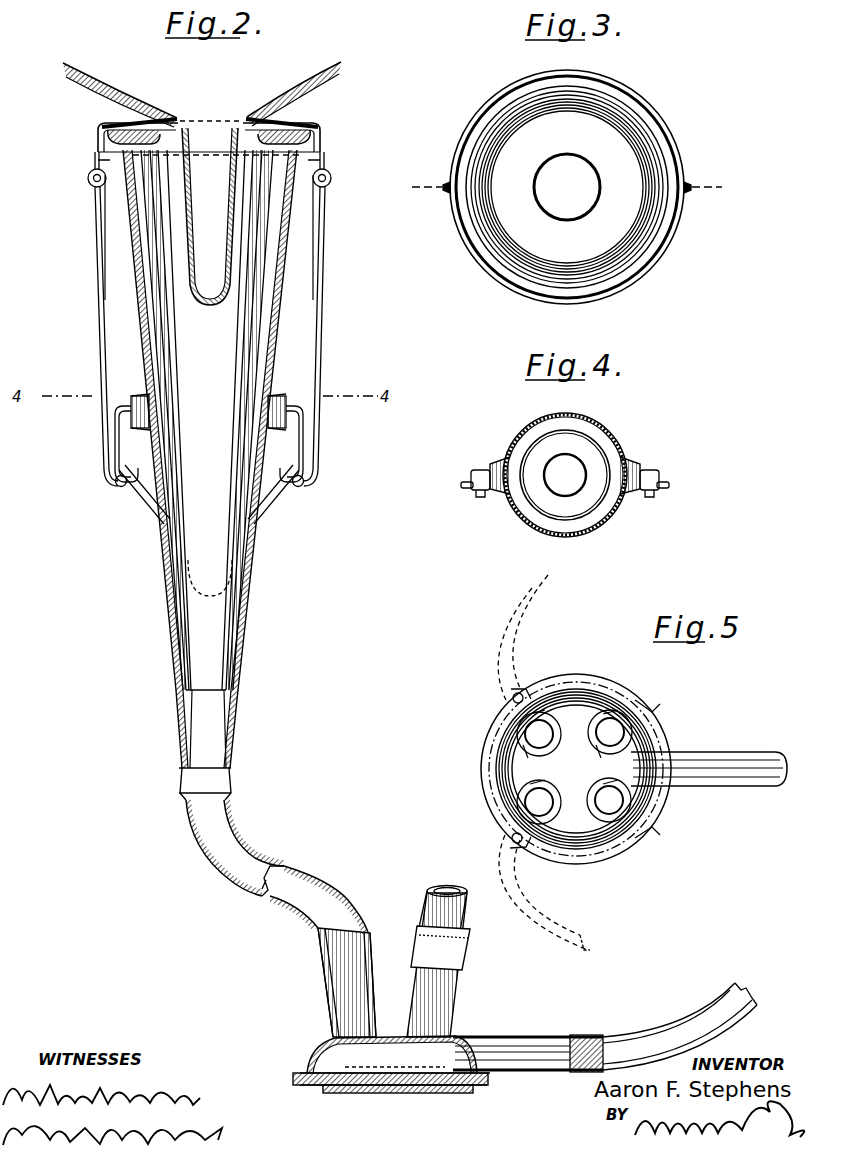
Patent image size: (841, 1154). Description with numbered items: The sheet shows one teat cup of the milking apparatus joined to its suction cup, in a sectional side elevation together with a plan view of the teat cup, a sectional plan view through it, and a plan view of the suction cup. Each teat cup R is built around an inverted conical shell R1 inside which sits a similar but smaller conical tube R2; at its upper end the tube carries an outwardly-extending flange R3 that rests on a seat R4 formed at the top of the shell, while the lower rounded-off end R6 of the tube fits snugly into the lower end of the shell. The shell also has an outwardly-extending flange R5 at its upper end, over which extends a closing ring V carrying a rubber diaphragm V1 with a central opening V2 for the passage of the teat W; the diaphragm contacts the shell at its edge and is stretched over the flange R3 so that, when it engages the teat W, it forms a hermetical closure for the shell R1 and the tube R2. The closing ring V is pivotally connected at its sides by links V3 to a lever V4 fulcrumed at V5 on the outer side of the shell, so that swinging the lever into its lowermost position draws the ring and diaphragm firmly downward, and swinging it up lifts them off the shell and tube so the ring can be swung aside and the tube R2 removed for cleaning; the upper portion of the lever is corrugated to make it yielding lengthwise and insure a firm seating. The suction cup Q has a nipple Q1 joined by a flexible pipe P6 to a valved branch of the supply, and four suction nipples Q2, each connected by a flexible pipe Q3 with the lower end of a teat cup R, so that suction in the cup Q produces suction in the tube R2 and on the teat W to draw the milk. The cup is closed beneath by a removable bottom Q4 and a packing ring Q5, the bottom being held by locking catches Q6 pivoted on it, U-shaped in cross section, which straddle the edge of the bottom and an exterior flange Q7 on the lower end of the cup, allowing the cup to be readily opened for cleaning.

In FIG. 2, the closing ring V is at (318, 128).
In FIG. 3, the closing ring V is at (683, 208).
In FIG. 2, the rubber diaphragm V1 is at (135, 118).
In FIG. 3, the rubber diaphragm V1 is at (638, 155).
In FIG. 2, the central opening V2 is at (218, 99).
In FIG. 3, the central opening V2 is at (562, 165).
In FIG. 2, the links V3 is at (104, 362).
In FIG. 3, the links V3 is at (446, 183).
In FIG. 4, the links V3 is at (465, 489).
In FIG. 2, the lever V4 is at (303, 440).
In FIG. 4, the lever V4 is at (480, 499).
In FIG. 2, the fulcrum V5 is at (134, 400).
In FIG. 4, the fulcrum V5 is at (497, 478).
In FIG. 2, the teat cup R is at (207, 475).
In FIG. 2, the inverted conical shell R1 is at (272, 345).
In FIG. 4, the inverted conical shell R1 is at (600, 525).
In FIG. 2, the conical tube R2 is at (186, 322).
In FIG. 4, the conical tube R2 is at (583, 449).
In FIG. 2, the outwardly-extending flange R3 is at (292, 130).
In FIG. 2, the seat R4 is at (211, 237).
In FIG. 2, the outwardly-extending flange R5 is at (322, 144).
In FIG. 2, the lower rounded-off end R6 is at (228, 690).
In FIG. 2, the teat W is at (210, 216).
In FIG. 2, the suction cup Q is at (325, 1050).
In FIG. 5, the suction cup Q is at (603, 765).
In FIG. 2, the nipple Q1 is at (528, 1037).
In FIG. 5, the nipple Q1 is at (760, 762).
In FIG. 2, the suction nipples Q2 is at (345, 1000).
In FIG. 5, the suction nipples Q2 is at (618, 728).
In FIG. 2, the flexible pipe Q3 is at (262, 873).
In FIG. 2, the removable bottom Q4 is at (318, 1087).
In FIG. 2, the packing ring Q5 is at (295, 1082).
In FIG. 2, the locking catches Q6 is at (410, 1094).
In FIG. 5, the locking catches Q6 is at (530, 956).
In FIG. 2, the flange Q7 is at (312, 1071).
In FIG. 5, the flange Q7 is at (655, 745).
In FIG. 2, the flexible pipe P6 is at (692, 1040).